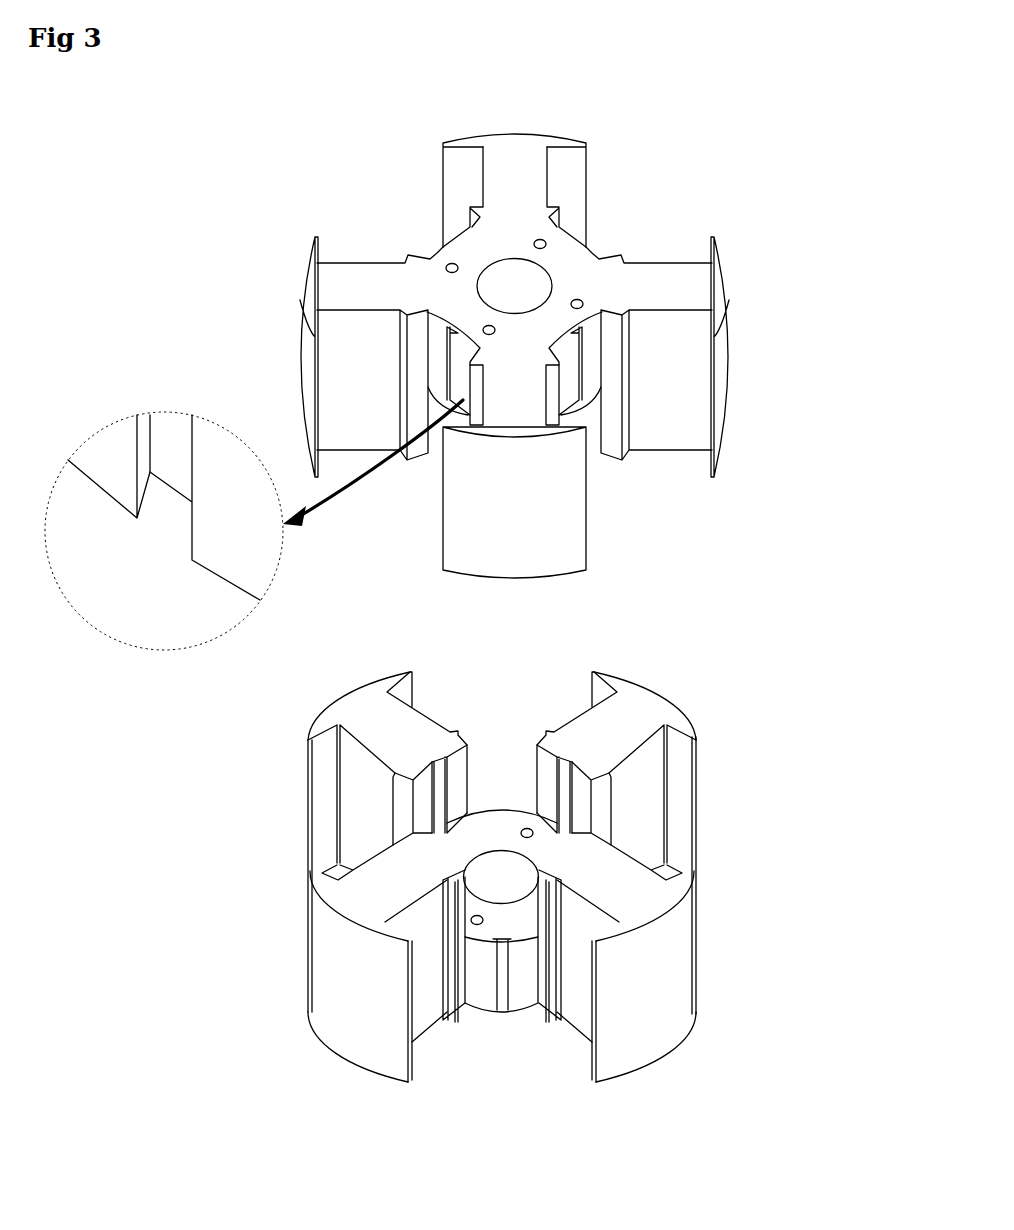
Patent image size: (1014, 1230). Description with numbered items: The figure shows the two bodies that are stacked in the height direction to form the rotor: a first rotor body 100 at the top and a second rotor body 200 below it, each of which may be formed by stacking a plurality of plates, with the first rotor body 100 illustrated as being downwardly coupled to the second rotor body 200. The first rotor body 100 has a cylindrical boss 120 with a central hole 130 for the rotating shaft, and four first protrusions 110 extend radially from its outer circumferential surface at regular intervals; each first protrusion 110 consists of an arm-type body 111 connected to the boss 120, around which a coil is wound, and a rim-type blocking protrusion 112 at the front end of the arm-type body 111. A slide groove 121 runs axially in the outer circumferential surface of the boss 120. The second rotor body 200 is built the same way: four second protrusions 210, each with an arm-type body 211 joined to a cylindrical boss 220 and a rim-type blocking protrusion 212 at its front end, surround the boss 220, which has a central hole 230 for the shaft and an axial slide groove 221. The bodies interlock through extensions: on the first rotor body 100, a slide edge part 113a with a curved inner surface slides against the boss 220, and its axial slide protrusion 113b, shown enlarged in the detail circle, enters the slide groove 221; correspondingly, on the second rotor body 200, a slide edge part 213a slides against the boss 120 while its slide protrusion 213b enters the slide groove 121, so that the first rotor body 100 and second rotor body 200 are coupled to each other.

The first rotor body 100 is at (716, 168).
The first protrusions 110 is at (730, 268).
The arm-type body 111 is at (658, 435).
The rim-type blocking protrusion 112 is at (723, 462).
The slide edge part 113a is at (222, 448).
The slide protrusion 113b is at (165, 433).
The boss 120 is at (562, 262).
The slide groove 121 is at (583, 360).
The hole 130 is at (493, 262).
The second rotor body 200 is at (735, 668).
The second protrusions 210 is at (643, 1030).
The arm-type body 211 is at (587, 732).
The rim-type blocking protrusion 212 is at (640, 692).
The slide edge part 213a is at (580, 793).
The slide protrusion 213b is at (553, 780).
The boss 220 is at (575, 905).
The slide groove 221 is at (492, 998).
The hole 230 is at (517, 922).